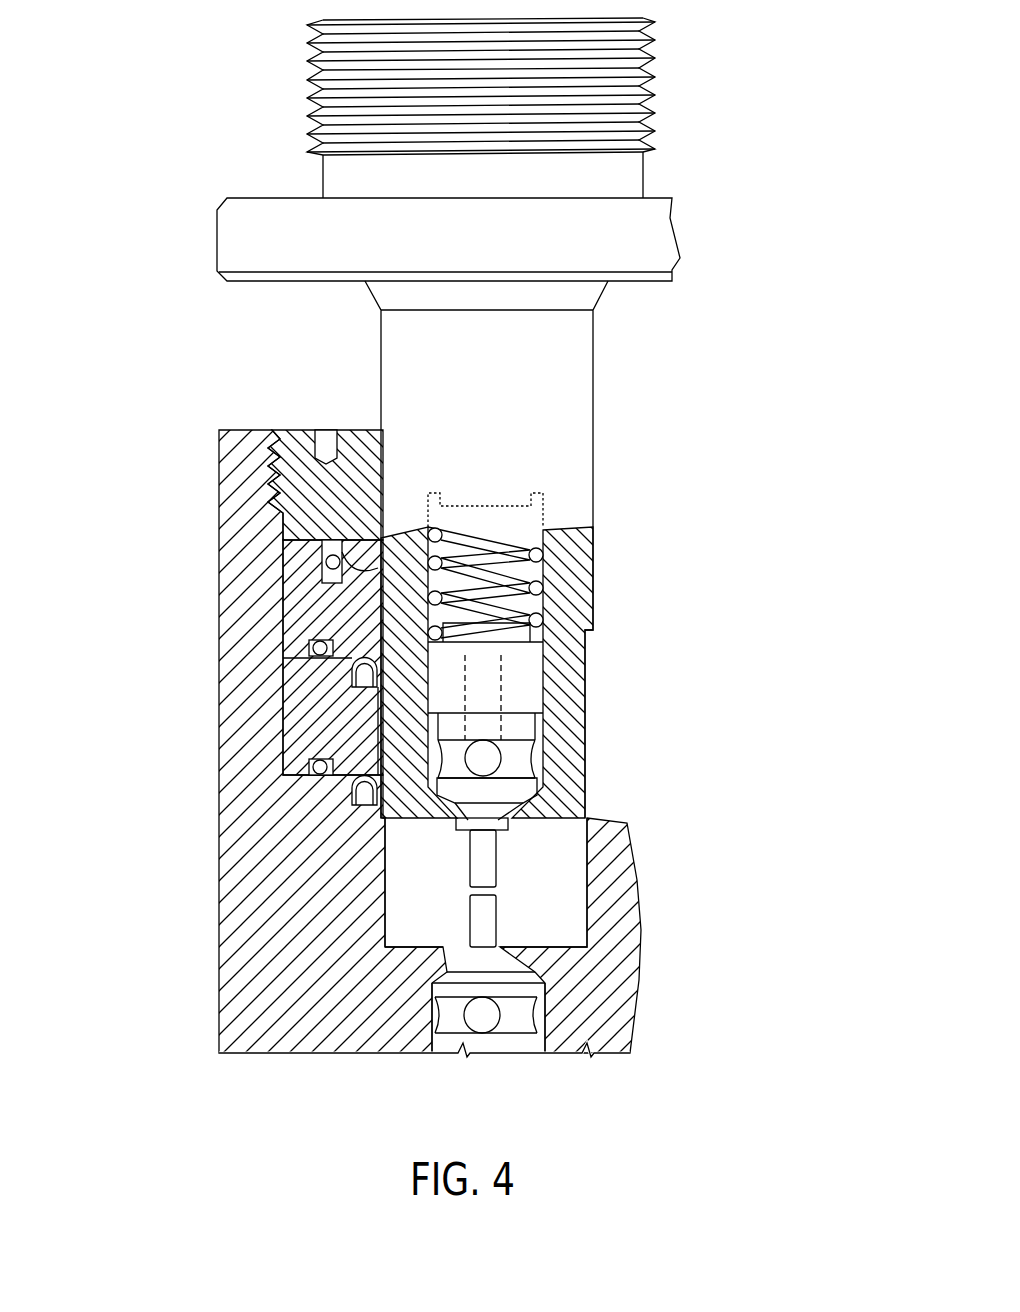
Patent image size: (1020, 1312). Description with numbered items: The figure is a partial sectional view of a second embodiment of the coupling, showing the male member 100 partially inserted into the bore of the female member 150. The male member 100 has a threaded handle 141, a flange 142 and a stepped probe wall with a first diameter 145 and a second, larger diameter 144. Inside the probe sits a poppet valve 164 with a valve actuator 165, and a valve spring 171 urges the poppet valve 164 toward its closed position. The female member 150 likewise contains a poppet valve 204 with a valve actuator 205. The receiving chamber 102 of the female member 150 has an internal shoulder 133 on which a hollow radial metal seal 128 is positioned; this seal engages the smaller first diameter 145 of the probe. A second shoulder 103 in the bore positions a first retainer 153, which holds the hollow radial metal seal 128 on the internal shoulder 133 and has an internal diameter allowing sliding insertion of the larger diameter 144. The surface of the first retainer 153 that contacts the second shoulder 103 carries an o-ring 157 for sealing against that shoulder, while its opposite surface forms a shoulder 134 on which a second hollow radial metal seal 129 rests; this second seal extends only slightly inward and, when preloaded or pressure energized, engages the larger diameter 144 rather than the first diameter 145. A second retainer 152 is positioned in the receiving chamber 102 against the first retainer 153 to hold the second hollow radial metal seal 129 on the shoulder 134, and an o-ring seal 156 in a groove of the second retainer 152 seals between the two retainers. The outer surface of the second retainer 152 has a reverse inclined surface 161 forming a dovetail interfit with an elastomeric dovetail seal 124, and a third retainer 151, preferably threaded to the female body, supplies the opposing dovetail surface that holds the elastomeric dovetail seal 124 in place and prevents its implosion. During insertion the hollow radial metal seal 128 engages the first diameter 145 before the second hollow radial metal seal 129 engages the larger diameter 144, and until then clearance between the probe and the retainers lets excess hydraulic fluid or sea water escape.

The male member 100 is at (752, 290).
The receiving chamber 102 is at (418, 935).
The second shoulder 103 is at (352, 776).
The elastomeric dovetail seal 124 is at (218, 440).
The hollow radial metal seal 128 is at (352, 800).
The second hollow radial metal seal 129 is at (357, 665).
The internal shoulder 133 is at (383, 830).
The shoulder 134 is at (357, 690).
The threaded handle 141 is at (650, 80).
The flange 142 is at (217, 253).
The second larger diameter 144 is at (594, 455).
The first diameter 145 is at (587, 740).
The female member 150 is at (178, 994).
The third retainer 151 is at (360, 560).
The second retainer 152 is at (218, 543).
The first retainer 153 is at (283, 660).
The o-ring seal 156 is at (310, 643).
The o-ring 157 is at (335, 772).
The reverse inclined surface 161 is at (330, 560).
The poppet valve 164 is at (497, 823).
The valve actuator 165 is at (490, 861).
The valve spring 171 is at (507, 558).
The poppet valve 204 is at (487, 963).
The valve actuator 205 is at (490, 920).